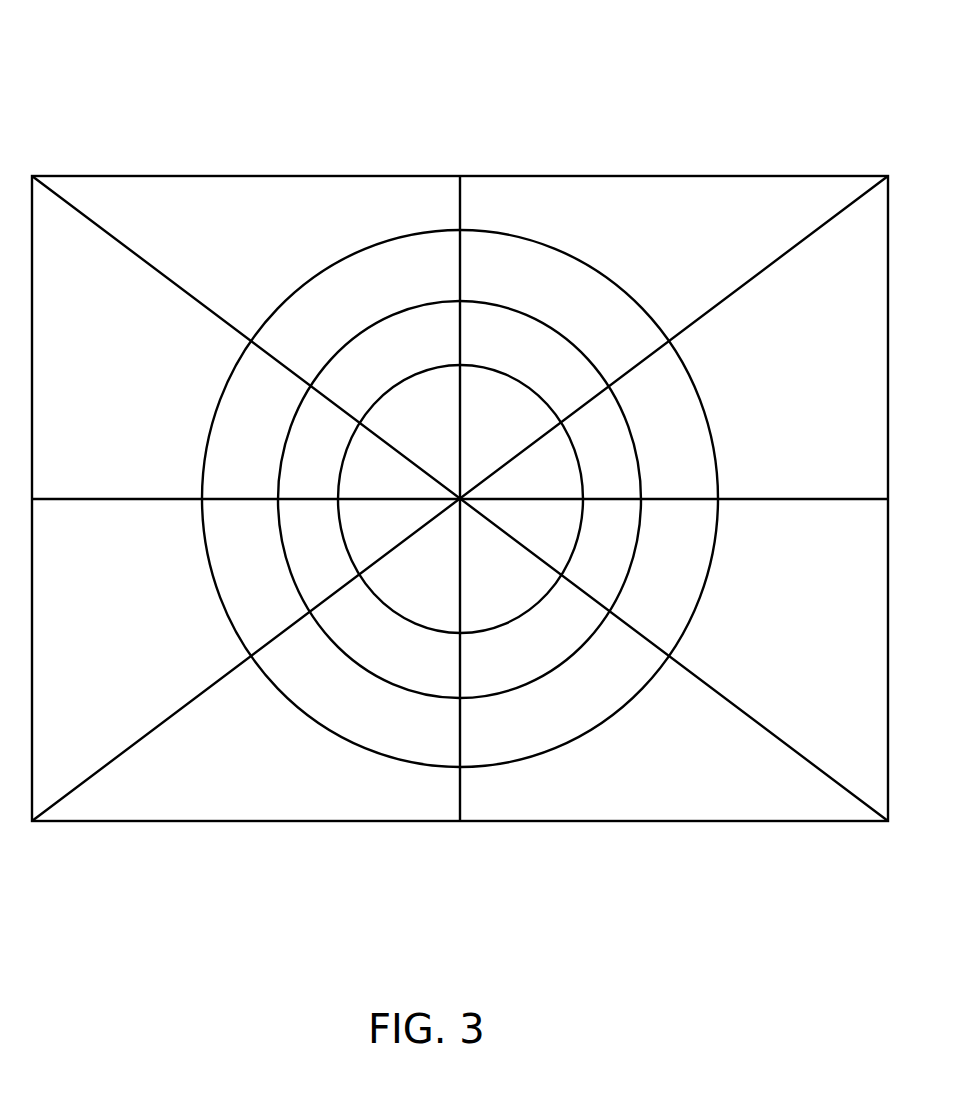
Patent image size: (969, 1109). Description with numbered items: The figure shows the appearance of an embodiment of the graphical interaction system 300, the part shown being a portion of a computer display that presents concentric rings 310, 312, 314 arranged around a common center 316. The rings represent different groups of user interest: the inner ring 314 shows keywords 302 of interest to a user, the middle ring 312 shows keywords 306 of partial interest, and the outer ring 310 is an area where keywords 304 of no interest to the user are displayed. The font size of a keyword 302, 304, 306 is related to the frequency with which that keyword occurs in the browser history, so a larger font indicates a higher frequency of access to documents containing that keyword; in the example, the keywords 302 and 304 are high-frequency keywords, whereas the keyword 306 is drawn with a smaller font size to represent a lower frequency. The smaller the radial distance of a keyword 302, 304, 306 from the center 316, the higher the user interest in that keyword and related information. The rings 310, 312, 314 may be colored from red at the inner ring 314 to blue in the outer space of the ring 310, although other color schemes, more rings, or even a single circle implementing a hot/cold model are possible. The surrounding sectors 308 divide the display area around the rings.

The graphical interaction system 300 is at (73, 122).
The keyword of interest 302 is at (404, 597).
The keyword of no interest 304 is at (433, 258).
The keyword of partial interest 306 is at (616, 477).
The triangular sectors 308 is at (162, 217).
The outer ring 310 is at (523, 285).
The middle ring 312 is at (528, 357).
The inner ring 314 is at (526, 422).
The center 316 is at (489, 507).